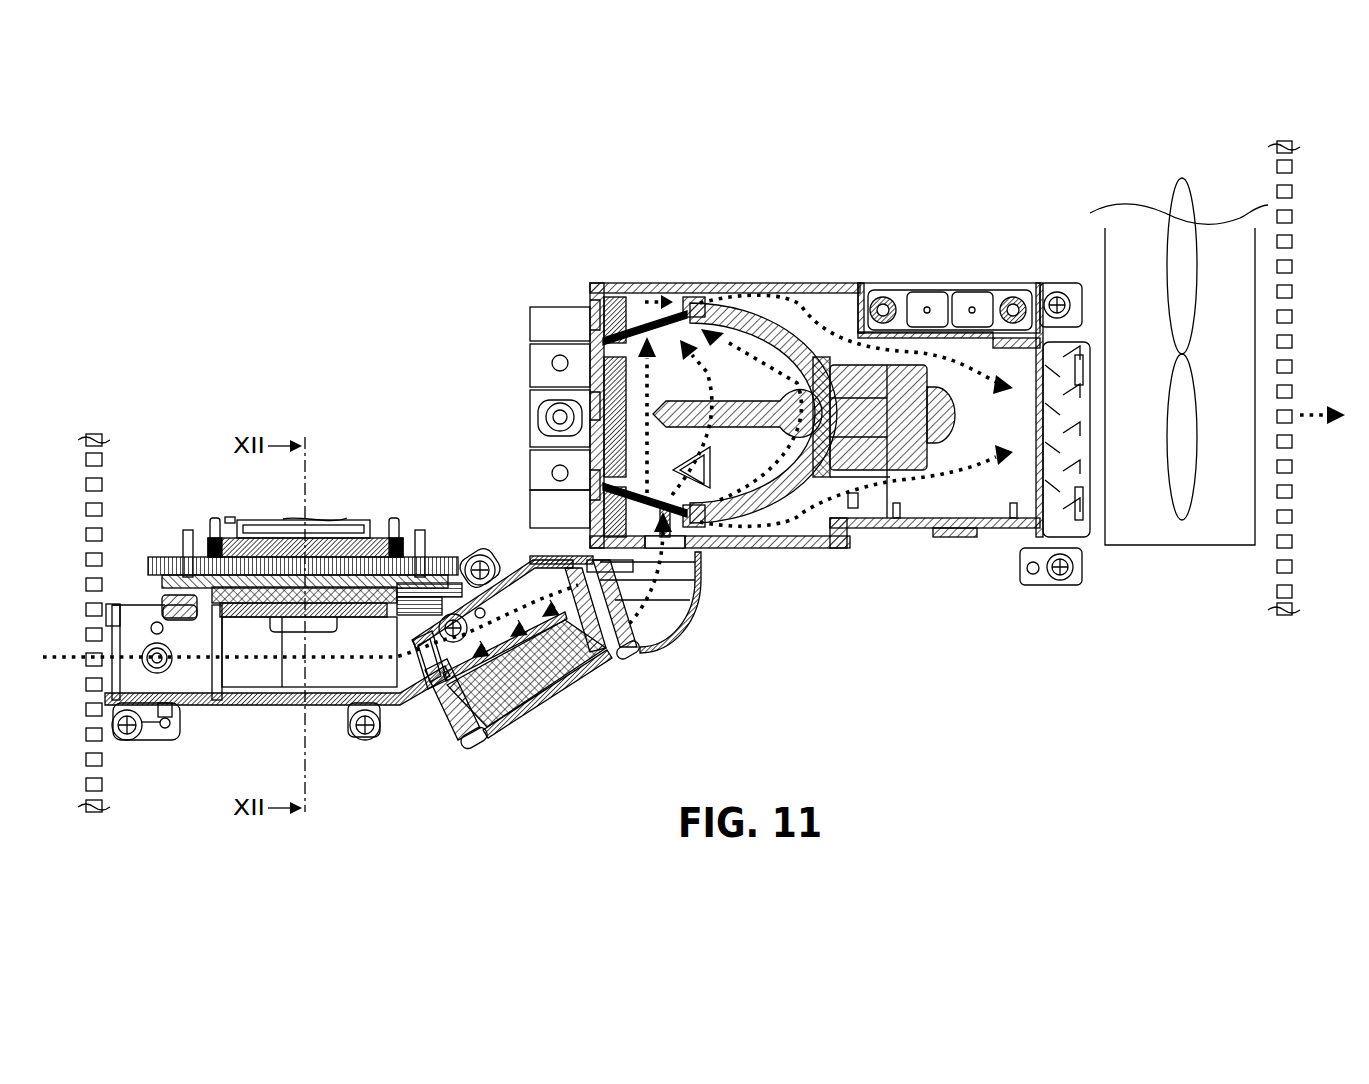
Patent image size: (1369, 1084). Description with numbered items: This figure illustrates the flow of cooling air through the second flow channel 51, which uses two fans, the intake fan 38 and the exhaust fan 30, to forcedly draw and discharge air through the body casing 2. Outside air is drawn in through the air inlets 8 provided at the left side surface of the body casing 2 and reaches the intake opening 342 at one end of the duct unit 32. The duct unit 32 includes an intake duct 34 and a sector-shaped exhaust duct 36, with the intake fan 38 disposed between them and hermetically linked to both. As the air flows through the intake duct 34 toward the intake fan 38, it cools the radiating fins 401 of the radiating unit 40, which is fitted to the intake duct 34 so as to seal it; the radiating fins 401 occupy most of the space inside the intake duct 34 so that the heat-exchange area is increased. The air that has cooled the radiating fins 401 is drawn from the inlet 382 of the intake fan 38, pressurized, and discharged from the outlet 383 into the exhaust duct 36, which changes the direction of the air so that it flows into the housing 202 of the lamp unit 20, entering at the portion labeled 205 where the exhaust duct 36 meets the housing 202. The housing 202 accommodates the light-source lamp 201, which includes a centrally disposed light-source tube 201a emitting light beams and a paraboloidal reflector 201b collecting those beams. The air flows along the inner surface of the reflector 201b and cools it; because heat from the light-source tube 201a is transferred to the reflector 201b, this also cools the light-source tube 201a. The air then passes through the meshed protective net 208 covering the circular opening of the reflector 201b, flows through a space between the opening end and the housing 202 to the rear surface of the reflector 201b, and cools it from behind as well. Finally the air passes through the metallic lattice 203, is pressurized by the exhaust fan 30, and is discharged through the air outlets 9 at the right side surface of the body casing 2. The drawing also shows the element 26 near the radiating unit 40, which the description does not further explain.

The body casing 2 is at (72, 722).
The air inlets 8 is at (88, 600).
The air outlets 9 is at (1296, 510).
The lamp unit 20 is at (893, 271).
The optical unit cover 26 is at (372, 528).
The exhaust fan 30 is at (1160, 548).
The duct unit 32 is at (423, 732).
The intake duct 34 is at (283, 702).
The exhaust duct 36 is at (676, 632).
The intake fan 38 is at (563, 690).
The radiating unit 40 is at (198, 540).
The second flow channel 51 is at (60, 664).
The light-source lamp 201 is at (836, 218).
The light-source tube 201a is at (727, 400).
The paraboloidal reflector 201b is at (790, 330).
The housing 202 is at (807, 550).
The metallic lattice 203 is at (1052, 545).
The air inlet opening 205 is at (690, 553).
The protective net 208 is at (636, 302).
The intake opening 342 is at (107, 618).
The inlet 382 is at (497, 655).
The outlet 383 is at (630, 652).
The radiating fins 401 is at (247, 688).